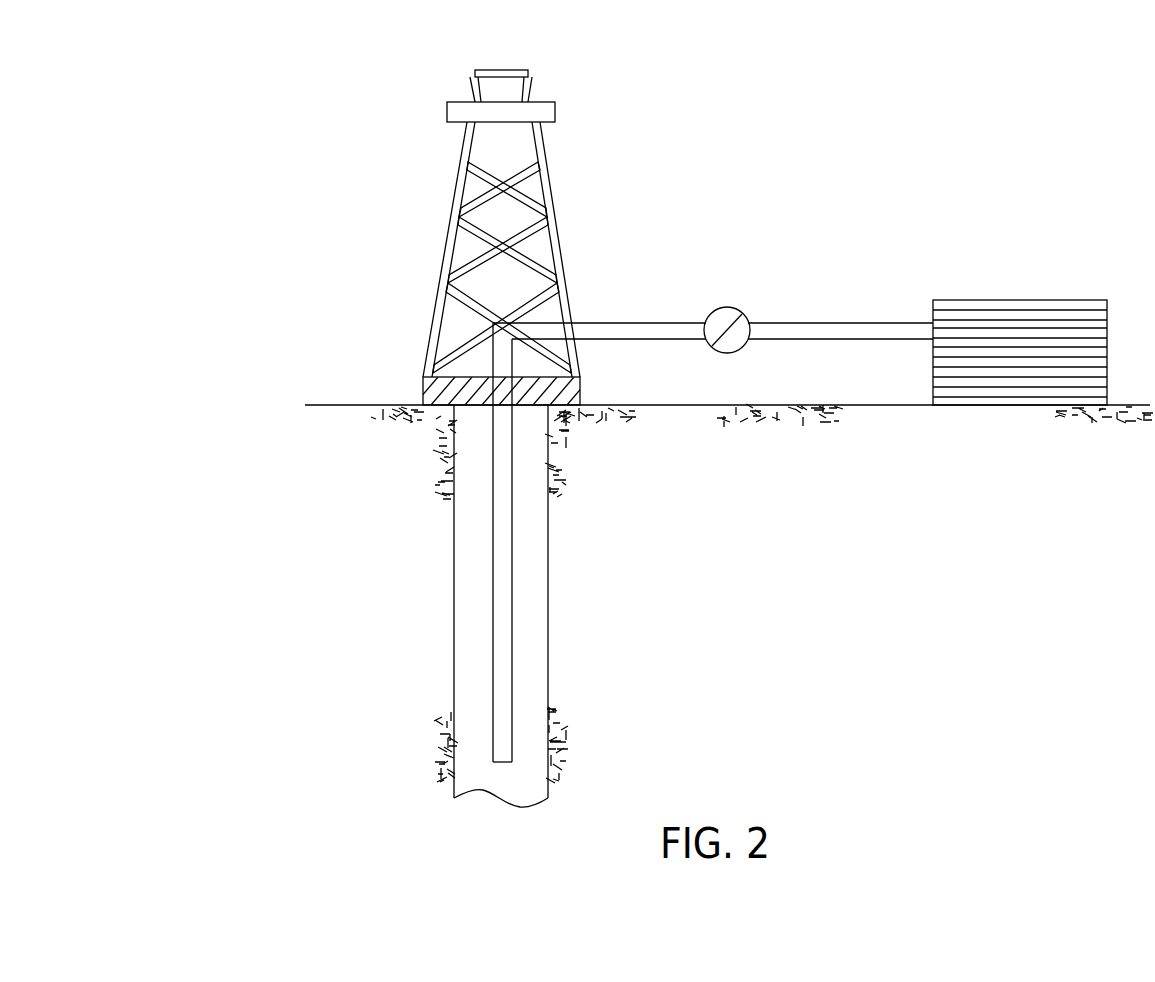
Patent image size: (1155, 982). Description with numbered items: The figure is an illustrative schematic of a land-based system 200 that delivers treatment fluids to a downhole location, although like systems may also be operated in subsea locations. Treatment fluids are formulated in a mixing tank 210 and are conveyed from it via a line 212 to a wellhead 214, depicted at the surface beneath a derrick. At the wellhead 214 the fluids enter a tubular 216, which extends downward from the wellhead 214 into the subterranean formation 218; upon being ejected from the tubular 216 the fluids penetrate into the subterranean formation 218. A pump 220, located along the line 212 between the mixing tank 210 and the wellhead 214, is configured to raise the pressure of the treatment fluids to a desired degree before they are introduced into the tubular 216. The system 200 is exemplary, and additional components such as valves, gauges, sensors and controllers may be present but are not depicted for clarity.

The system 200 is at (318, 93).
The mixing tank 210 is at (977, 300).
The line 212 is at (618, 322).
The wellhead 214 is at (423, 392).
The tubular 216 is at (548, 600).
The subterranean formation 218 is at (283, 646).
The pump 220 is at (723, 308).